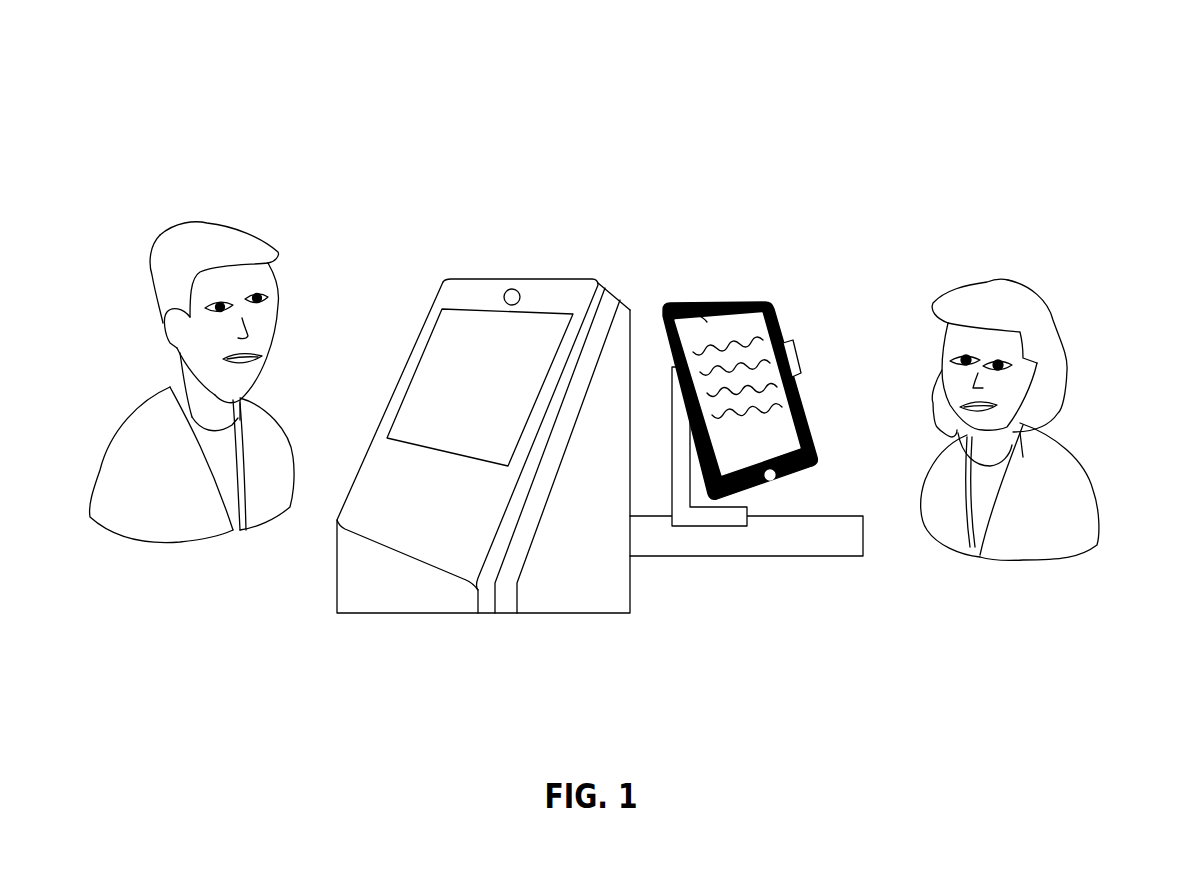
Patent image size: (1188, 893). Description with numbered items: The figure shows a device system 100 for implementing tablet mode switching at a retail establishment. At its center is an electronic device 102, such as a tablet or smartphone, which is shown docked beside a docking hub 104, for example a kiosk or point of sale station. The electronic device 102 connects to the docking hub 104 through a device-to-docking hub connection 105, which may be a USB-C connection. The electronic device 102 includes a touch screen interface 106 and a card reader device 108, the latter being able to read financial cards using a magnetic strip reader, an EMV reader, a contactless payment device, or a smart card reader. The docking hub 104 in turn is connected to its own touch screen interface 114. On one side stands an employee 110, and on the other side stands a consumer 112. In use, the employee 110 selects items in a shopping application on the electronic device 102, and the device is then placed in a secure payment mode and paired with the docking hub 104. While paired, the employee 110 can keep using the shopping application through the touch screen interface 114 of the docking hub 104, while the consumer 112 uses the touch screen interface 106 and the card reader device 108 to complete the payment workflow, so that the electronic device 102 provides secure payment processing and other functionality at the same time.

The device system 100 is at (1120, 77).
The electronic device 102 is at (757, 303).
The docking hub 104 is at (513, 278).
The device-to-docking hub connection 105 is at (708, 515).
The touch screen interface 106 is at (707, 322).
The card reader device 108 is at (800, 353).
The employee 110 is at (160, 235).
The consumer 112 is at (1008, 280).
The touch screen interface 114 is at (448, 341).